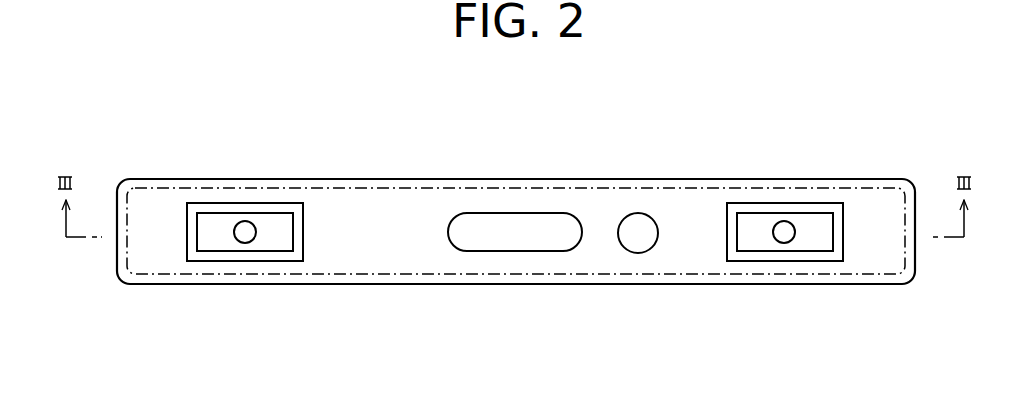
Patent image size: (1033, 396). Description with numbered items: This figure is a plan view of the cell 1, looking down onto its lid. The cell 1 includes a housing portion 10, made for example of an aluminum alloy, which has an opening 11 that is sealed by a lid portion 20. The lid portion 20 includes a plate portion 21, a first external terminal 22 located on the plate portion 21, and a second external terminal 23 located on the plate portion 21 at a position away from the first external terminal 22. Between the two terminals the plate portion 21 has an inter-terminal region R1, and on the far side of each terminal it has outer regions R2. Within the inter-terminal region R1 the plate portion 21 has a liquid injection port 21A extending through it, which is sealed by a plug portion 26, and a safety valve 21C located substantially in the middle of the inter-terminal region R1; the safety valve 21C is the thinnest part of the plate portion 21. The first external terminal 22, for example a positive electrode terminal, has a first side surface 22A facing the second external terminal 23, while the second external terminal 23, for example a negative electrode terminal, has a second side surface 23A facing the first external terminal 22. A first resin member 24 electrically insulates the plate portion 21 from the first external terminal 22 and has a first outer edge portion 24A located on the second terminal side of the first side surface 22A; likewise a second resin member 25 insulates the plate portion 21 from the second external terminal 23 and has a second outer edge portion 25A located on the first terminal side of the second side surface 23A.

The cell 1 is at (516, 200).
The housing portion 10 is at (364, 184).
The opening 11 is at (598, 188).
The lid portion 20 is at (516, 226).
The plate portion 21 is at (533, 231).
The liquid injection port 21A is at (644, 231).
The safety valve 21C is at (501, 227).
The first external terminal 22 is at (268, 231).
The first side surface 22A is at (293, 228).
The second external terminal 23 is at (778, 216).
The second side surface 23A is at (735, 230).
The first resin member 24 is at (251, 210).
The first outer edge portion 24A is at (298, 237).
The second resin member 25 is at (757, 208).
The second outer edge portion 25A is at (733, 240).
The plug portion 26 is at (637, 237).
The inter-terminal region R1 is at (533, 216).
The outer regions R2 is at (518, 216).